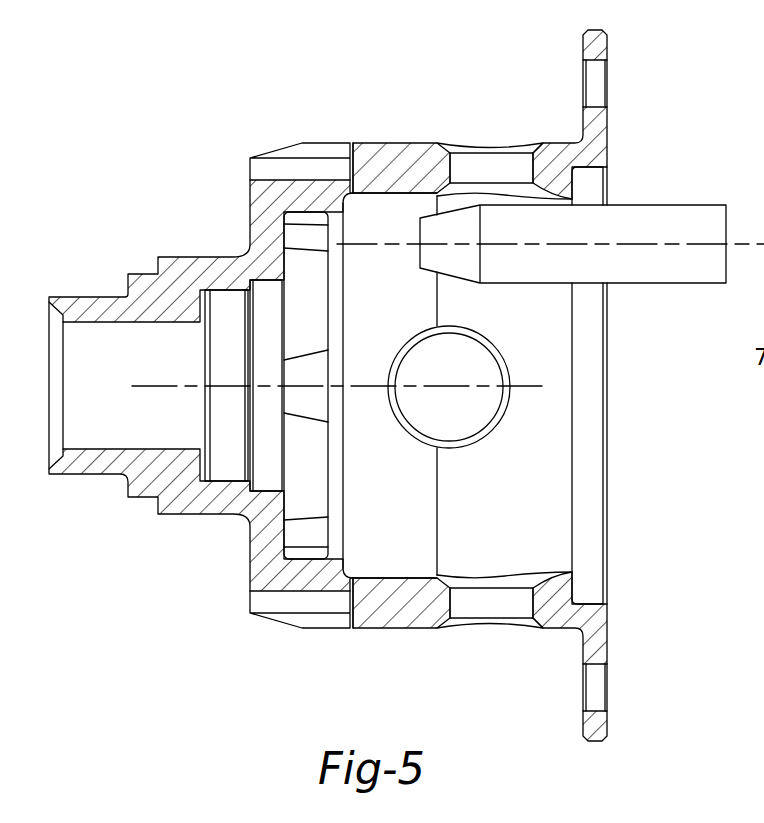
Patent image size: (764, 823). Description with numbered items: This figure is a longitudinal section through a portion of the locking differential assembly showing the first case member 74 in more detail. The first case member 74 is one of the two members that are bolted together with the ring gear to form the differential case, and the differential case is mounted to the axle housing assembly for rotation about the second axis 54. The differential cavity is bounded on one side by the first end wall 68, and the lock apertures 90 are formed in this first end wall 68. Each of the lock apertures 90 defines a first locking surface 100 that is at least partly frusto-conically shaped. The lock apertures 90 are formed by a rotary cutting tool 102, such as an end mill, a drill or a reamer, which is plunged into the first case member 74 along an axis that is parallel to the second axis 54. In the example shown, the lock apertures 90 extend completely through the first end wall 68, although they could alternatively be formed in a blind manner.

The first end wall 68 is at (250, 214).
The first case member 74 is at (567, 150).
The lock apertures 90 is at (312, 247).
The first locking surface 100 is at (307, 417).
The second axis 54 is at (530, 390).
The rotary cutting tool 102 is at (636, 203).